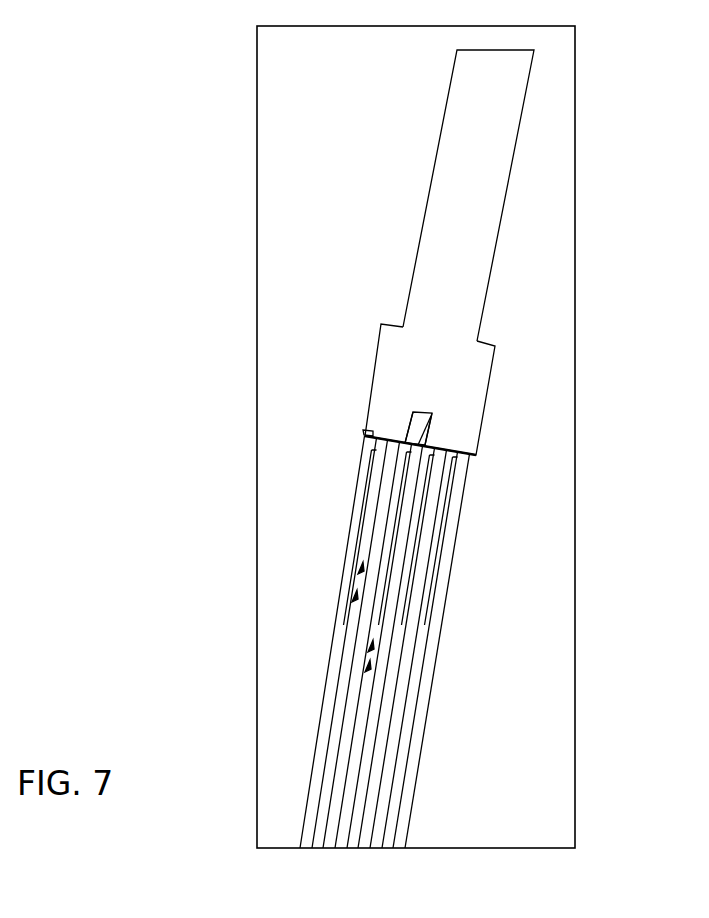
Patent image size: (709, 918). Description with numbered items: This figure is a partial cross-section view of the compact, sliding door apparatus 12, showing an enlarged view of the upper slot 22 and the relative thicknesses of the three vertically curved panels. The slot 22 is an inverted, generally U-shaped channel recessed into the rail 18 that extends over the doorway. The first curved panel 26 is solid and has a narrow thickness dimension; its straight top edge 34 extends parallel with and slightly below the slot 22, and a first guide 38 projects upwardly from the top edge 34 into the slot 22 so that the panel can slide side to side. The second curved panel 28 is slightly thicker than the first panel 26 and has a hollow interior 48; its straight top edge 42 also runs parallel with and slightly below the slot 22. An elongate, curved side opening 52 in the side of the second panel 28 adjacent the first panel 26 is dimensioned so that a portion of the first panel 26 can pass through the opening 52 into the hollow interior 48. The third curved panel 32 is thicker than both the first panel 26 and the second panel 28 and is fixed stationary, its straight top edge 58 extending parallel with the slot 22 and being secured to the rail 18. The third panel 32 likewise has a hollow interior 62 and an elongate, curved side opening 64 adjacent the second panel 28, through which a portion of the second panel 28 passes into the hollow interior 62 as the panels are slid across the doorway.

The compact, sliding door apparatus 12 is at (482, 449).
The rail 18 is at (428, 200).
The slot 22 is at (412, 412).
The first curved panel 26 is at (403, 550).
The second curved panel 28 is at (380, 512).
The third curved panel 32 is at (359, 480).
The top edge 34 is at (431, 432).
The first guide 38 is at (432, 413).
The top edge 42 is at (404, 440).
The hollow interior 48 is at (368, 668).
The side opening 52 is at (371, 648).
The top edge 58 is at (364, 432).
The hollow interior 62 is at (355, 598).
The side opening 64 is at (361, 570).